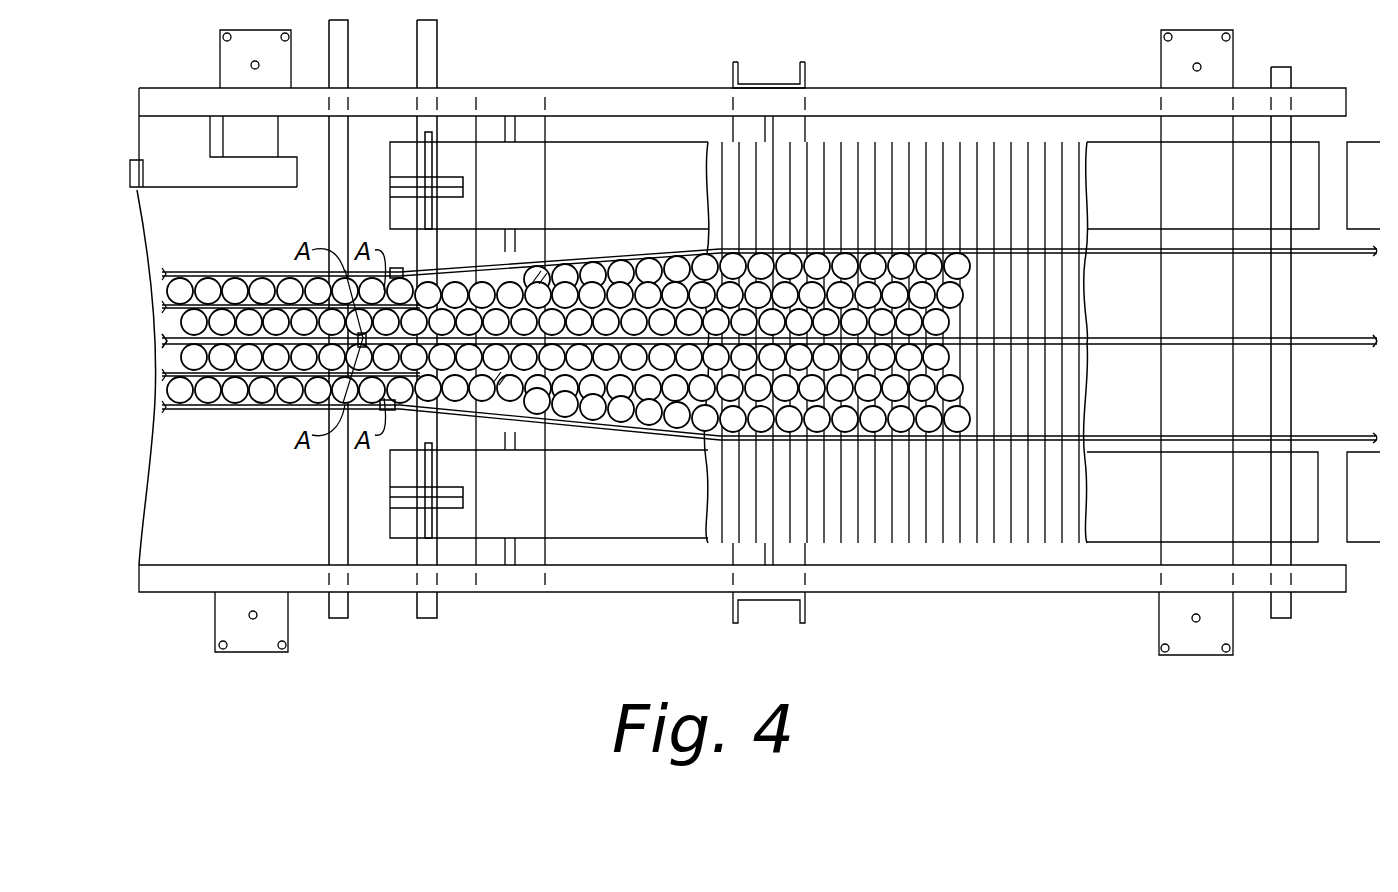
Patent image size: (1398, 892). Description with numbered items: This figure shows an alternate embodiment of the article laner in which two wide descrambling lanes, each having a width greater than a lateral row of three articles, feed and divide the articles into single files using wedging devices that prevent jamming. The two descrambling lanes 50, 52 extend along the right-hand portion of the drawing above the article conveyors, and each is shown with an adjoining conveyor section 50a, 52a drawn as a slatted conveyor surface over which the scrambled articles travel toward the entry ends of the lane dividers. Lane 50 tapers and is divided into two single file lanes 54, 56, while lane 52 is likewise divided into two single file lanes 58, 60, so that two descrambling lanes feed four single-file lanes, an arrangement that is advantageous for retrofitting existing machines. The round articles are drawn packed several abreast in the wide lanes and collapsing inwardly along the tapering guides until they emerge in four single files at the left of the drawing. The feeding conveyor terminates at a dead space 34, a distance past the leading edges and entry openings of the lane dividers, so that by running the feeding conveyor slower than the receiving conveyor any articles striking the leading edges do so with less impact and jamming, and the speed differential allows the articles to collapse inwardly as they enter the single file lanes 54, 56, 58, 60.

The dead space 34 is at (1327, 530).
The lane 50 is at (1350, 314).
The first conveyor slat section 50a is at (1146, 314).
The lane 52 is at (1345, 405).
The second conveyor slat section 52a is at (1146, 405).
The single file lane 54 is at (160, 292).
The single file lane 56 is at (162, 325).
The single file lane 58 is at (162, 360).
The single file lane 60 is at (162, 393).